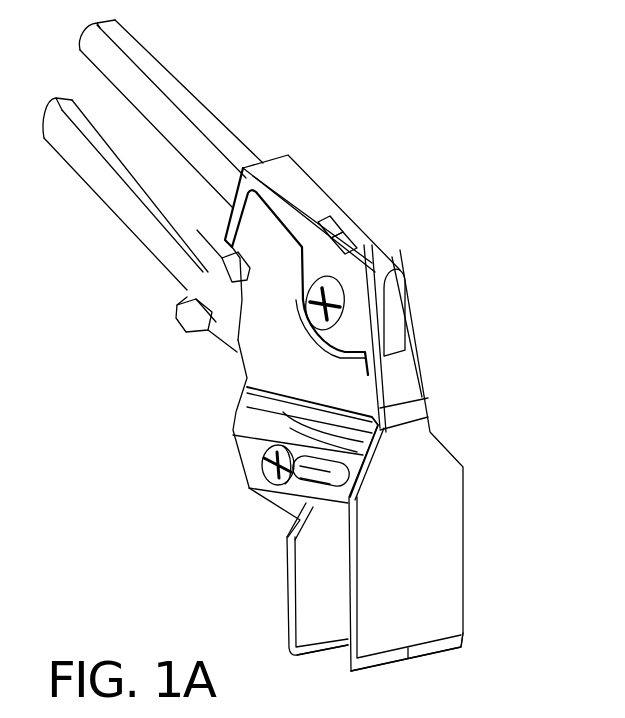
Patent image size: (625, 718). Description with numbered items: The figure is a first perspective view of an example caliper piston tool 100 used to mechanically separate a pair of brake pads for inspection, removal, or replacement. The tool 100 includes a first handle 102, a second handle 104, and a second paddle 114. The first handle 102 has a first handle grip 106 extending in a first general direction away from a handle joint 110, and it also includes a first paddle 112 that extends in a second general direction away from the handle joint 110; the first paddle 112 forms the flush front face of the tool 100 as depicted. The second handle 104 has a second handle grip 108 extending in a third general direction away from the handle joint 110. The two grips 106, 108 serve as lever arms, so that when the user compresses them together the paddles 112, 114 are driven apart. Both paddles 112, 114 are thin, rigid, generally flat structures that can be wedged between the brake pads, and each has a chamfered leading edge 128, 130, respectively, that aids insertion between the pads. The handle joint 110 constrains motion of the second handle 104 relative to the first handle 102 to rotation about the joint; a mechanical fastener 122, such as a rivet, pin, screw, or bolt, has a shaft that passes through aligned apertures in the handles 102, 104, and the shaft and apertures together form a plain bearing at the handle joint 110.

The caliper piston tool 100 is at (349, 111).
The first handle 102 is at (340, 208).
The second handle 104 is at (220, 347).
The first handle grip 106 is at (213, 117).
The second handle grip 108 is at (85, 182).
The handle joint 110 is at (405, 263).
The first paddle 112 is at (462, 580).
The second paddle 114 is at (287, 600).
The mechanical fastener 122 is at (338, 298).
The chamfered leading edge 128 is at (460, 645).
The chamfered leading edge 130 is at (293, 653).